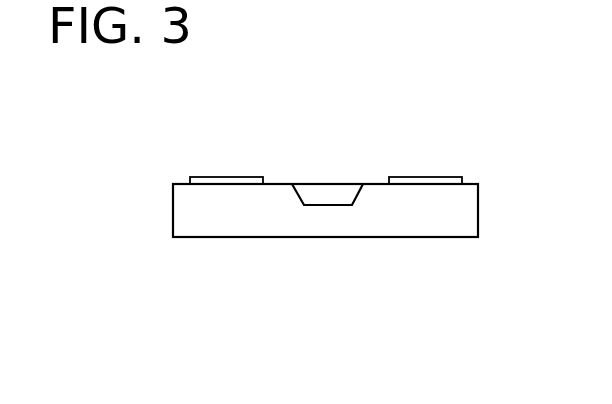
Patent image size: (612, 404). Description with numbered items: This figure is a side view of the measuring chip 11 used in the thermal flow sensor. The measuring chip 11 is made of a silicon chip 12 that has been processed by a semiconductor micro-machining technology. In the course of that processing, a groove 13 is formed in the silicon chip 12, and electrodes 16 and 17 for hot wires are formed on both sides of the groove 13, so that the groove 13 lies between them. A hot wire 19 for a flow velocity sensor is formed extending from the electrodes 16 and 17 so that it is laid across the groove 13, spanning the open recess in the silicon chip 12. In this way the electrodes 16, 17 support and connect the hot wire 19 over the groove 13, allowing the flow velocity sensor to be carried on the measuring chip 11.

The measuring chip 11 is at (522, 138).
The silicon chip 12 is at (462, 215).
The groove 13 is at (327, 196).
The electrode 16 is at (425, 178).
The electrode 17 is at (227, 178).
The hot wire for flow velocity sensor 19 is at (322, 183).